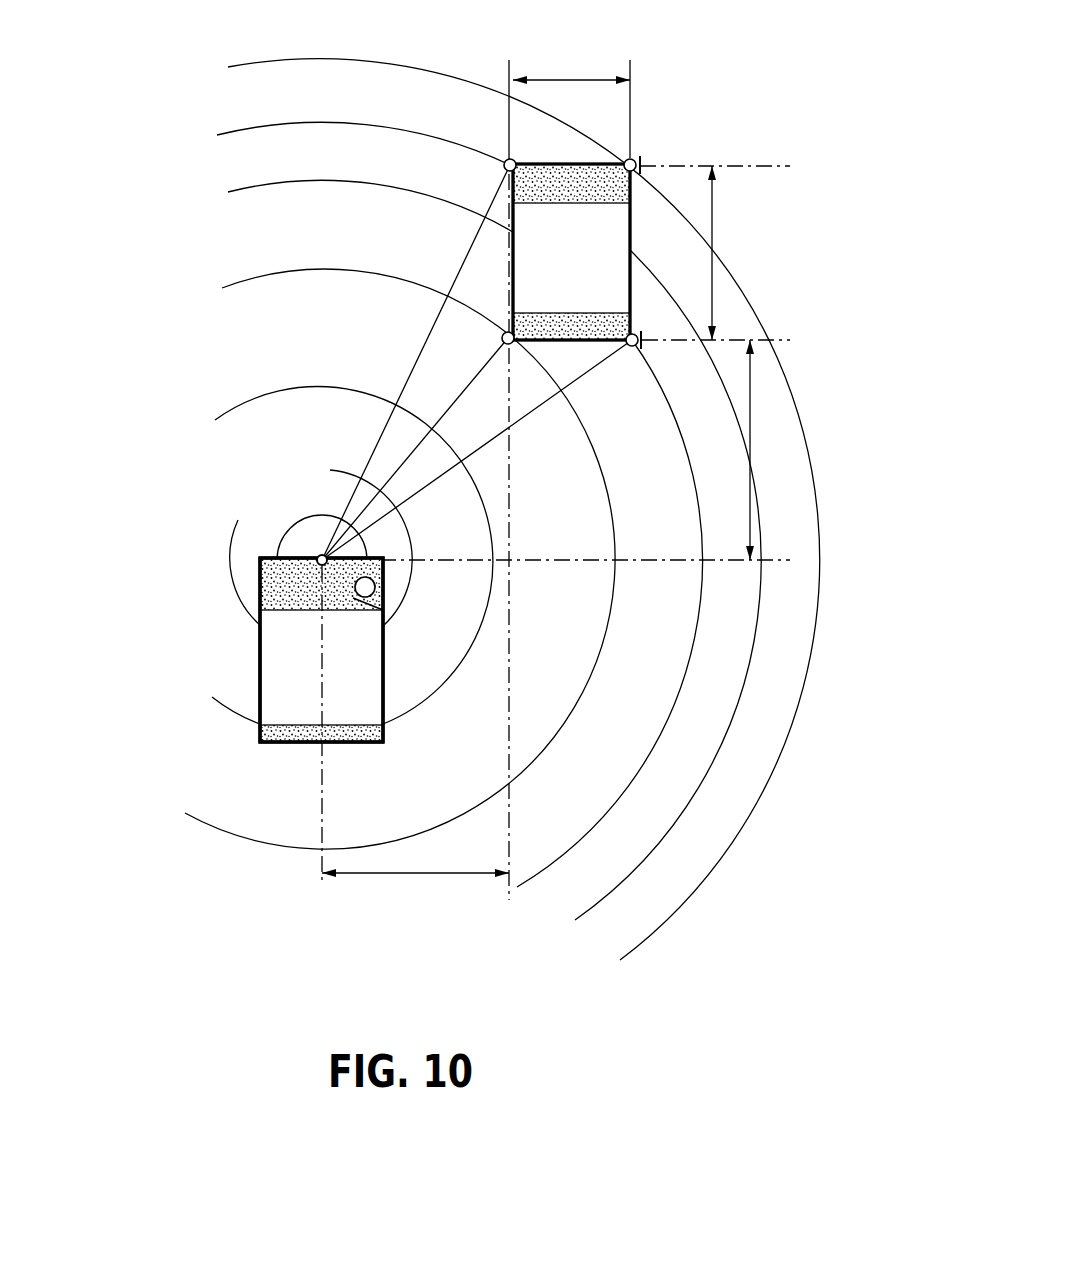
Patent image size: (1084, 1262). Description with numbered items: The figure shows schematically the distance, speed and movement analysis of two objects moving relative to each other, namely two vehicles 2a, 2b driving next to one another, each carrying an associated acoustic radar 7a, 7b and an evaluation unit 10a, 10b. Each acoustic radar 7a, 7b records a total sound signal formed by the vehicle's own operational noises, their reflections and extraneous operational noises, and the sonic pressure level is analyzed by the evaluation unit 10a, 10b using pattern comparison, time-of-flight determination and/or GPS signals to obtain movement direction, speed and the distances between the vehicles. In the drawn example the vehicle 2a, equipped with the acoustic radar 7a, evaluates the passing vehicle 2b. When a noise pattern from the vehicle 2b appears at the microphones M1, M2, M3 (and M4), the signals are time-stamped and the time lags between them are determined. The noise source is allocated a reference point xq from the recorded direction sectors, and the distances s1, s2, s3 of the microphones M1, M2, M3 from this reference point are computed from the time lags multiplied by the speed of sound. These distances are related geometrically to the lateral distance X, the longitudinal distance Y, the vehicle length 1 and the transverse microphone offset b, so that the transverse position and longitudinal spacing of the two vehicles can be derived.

The length of the actual vehicle 1 is at (713, 262).
The vehicle 2a is at (514, 212).
The vehicle 2b is at (272, 580).
The acoustic radar 7a is at (571, 252).
The evaluation unit 10a is at (571, 252).
The acoustic radar 7b is at (321, 650).
The evaluation unit 10b is at (321, 650).
The distance of microphone M1 from the vehicle s1 is at (455, 280).
The distance of microphone M2 from the vehicle s2 is at (488, 365).
The distance of microphone M3 from the vehicle s3 is at (533, 412).
The microphone M1 is at (508, 159).
The microphone M2 is at (437, 318).
The microphone M3 is at (640, 346).
The fourth measurement point M4 is at (632, 158).
The lateral offset of microphone M3 b is at (571, 64).
The lateral distance X is at (750, 425).
The distance in the longitudinal direction Y is at (373, 875).
The reference point Q(x,y) xq is at (406, 586).